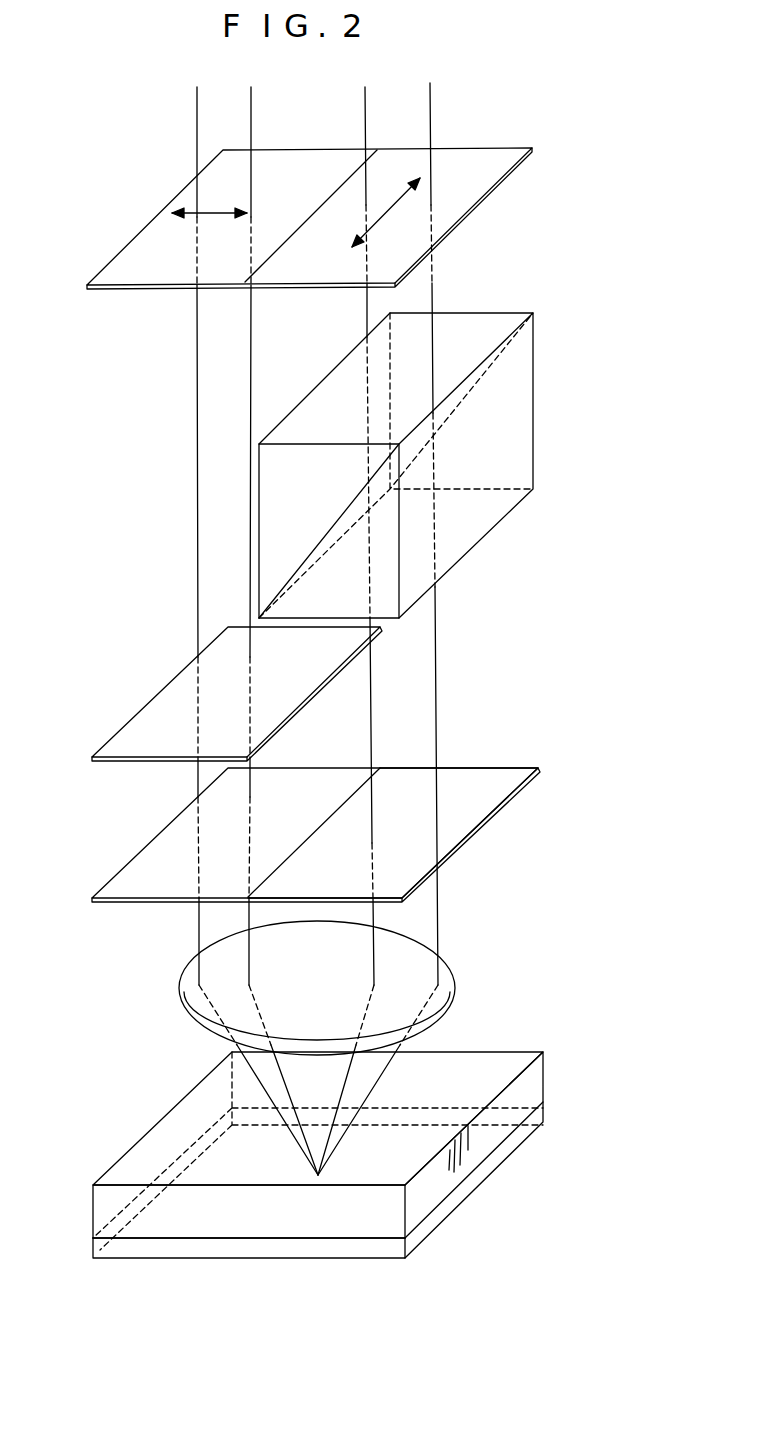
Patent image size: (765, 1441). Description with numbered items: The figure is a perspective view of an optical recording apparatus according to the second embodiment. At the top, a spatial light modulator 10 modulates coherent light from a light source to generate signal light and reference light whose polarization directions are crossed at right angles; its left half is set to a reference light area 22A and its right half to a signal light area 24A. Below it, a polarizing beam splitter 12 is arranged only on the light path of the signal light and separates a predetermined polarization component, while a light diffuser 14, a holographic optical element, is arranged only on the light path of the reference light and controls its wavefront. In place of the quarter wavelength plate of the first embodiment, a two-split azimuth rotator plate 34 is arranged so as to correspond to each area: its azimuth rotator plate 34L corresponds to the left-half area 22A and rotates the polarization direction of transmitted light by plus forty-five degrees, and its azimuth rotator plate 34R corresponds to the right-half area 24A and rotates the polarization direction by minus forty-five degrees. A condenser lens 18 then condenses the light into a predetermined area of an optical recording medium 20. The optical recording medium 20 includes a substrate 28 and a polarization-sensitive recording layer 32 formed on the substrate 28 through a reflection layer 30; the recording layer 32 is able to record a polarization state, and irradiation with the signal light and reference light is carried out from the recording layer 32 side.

The spatial light modulator 10 is at (495, 165).
The reference light area 22A is at (125, 250).
The signal light area 24A is at (420, 160).
The polarizing beam splitter 12 is at (520, 380).
The light diffuser 14 is at (172, 698).
The two-split azimuth rotator plate 34 is at (355, 812).
The azimuth rotator plate 34L is at (173, 840).
The azimuth rotator plate 34R is at (482, 798).
The condenser lens 18 is at (447, 966).
The optical recording medium 20 is at (348, 1150).
The recording layer 32 is at (140, 1150).
The reflection layer 30 is at (163, 1247).
The substrate 28 is at (307, 1248).